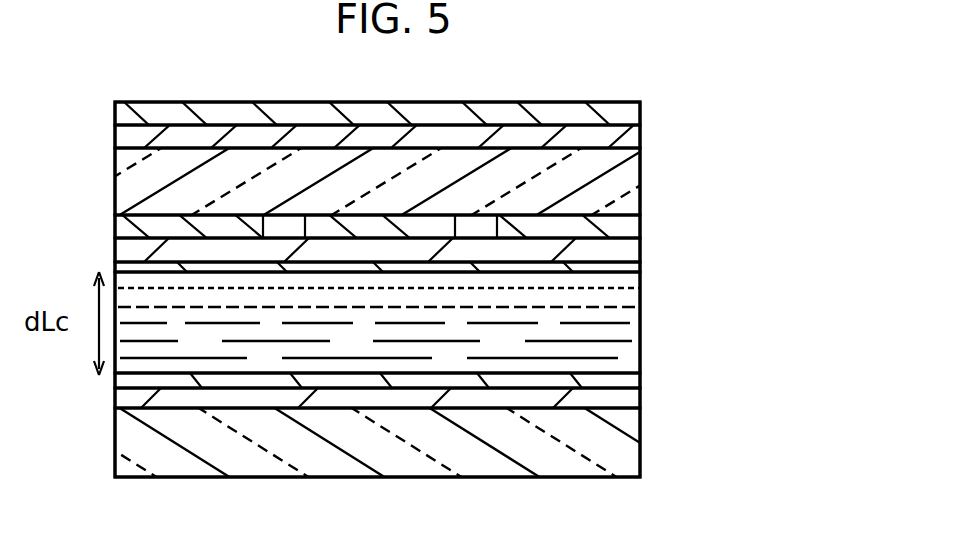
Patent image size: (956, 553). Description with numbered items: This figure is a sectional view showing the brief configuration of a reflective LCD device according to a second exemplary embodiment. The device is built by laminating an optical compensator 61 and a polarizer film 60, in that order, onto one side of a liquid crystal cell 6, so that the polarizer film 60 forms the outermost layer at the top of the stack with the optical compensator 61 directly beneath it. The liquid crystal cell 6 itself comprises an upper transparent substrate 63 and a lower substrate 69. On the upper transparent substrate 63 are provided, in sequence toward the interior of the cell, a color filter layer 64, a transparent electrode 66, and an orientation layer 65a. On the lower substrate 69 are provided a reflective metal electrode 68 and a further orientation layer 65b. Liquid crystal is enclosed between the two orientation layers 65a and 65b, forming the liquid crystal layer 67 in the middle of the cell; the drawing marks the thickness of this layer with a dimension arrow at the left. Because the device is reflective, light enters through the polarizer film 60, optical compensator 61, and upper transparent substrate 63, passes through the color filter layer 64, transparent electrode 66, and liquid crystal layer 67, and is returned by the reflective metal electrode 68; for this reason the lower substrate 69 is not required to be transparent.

The polarizer film 60 is at (630, 115).
The optical compensator 61 is at (630, 138).
The upper transparent substrate 63 is at (618, 176).
The color filter layer 64 is at (630, 227).
The transparent electrode 66 is at (630, 252).
The orientation layer 65a is at (630, 267).
The liquid crystal layer 67 is at (623, 348).
The orientation layer 65b is at (630, 382).
The reflective metal electrode 68 is at (630, 400).
The lower substrate 69 is at (630, 453).
The liquid crystal cell 6 is at (820, 155).